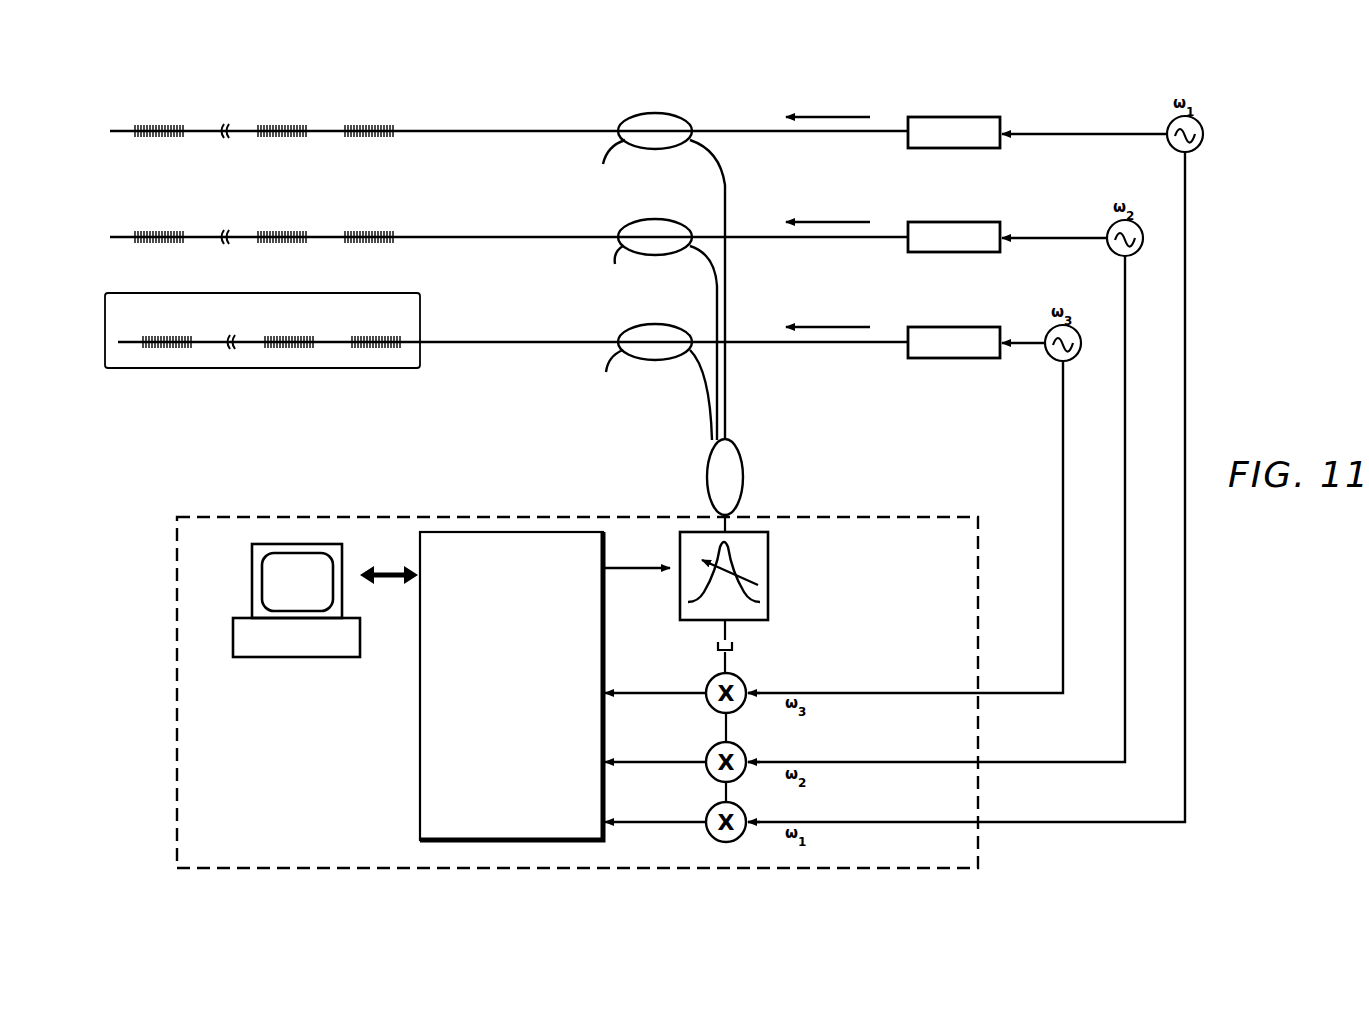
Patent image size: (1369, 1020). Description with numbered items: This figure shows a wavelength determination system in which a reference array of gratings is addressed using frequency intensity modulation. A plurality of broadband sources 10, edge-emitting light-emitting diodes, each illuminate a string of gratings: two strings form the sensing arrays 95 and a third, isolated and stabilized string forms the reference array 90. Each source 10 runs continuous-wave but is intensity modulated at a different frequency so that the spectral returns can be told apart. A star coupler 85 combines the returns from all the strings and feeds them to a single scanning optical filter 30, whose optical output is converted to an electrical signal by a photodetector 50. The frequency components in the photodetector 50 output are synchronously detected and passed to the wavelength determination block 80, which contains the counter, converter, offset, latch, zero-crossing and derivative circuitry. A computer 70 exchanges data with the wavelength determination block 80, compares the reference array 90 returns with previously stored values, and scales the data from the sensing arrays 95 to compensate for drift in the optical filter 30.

The sensing arrays 95 is at (397, 123).
The reference array 90 is at (425, 313).
The broadband source 10 is at (1000, 117).
The star coupler 85 is at (750, 462).
The tunable optical filter 30 is at (770, 607).
The photodetector 50 is at (737, 647).
The computer 70 is at (313, 665).
The wavelength determination block 80 is at (413, 770).